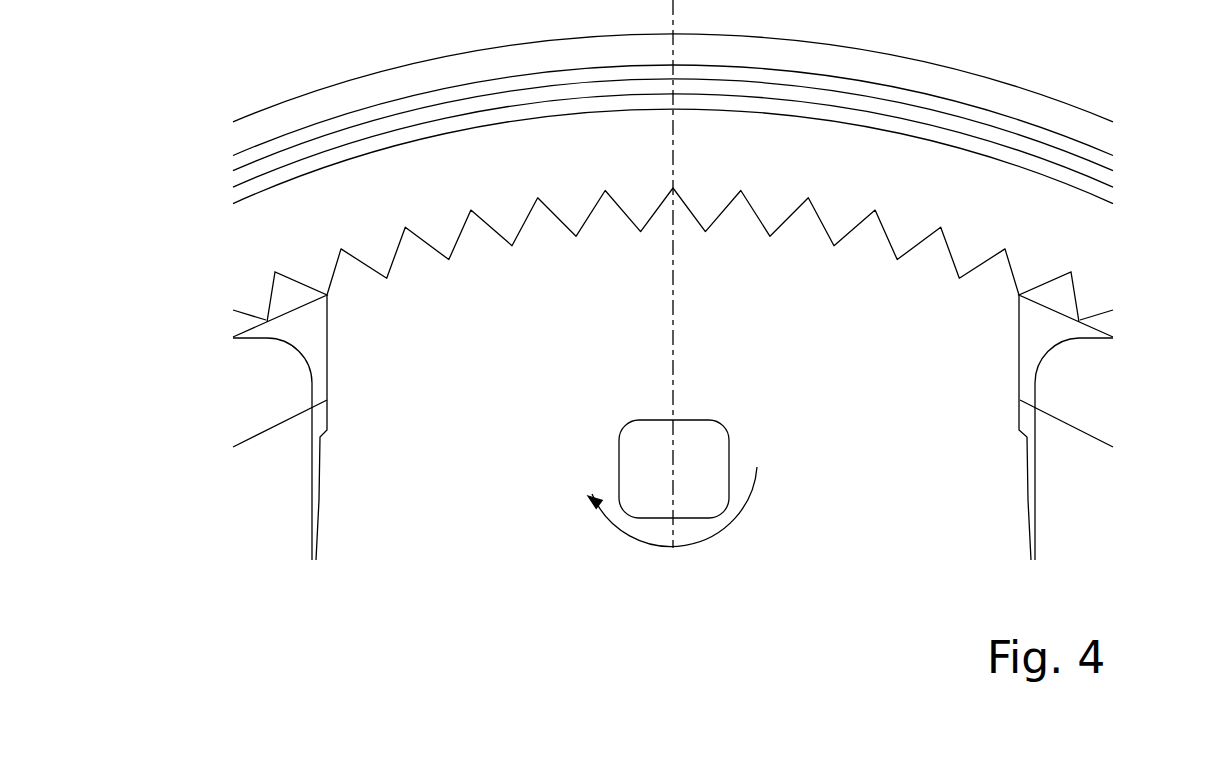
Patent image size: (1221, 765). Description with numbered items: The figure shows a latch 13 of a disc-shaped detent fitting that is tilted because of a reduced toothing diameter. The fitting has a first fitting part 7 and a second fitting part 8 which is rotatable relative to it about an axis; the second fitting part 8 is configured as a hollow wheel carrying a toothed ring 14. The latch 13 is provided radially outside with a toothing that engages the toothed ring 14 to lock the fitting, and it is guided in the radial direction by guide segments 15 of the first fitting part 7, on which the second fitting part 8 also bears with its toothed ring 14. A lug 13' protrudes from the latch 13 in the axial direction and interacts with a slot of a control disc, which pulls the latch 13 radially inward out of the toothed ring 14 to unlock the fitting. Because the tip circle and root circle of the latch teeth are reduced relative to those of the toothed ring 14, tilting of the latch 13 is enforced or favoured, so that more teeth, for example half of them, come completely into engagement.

The second fitting part 8 is at (873, 168).
The first fitting part 7 is at (305, 333).
The toothed ring 14 is at (1062, 285).
The guide segments 15 is at (272, 475).
The latch 13 is at (382, 510).
The lug 13' is at (588, 519).